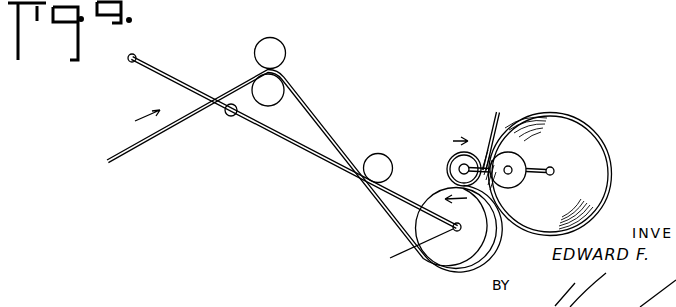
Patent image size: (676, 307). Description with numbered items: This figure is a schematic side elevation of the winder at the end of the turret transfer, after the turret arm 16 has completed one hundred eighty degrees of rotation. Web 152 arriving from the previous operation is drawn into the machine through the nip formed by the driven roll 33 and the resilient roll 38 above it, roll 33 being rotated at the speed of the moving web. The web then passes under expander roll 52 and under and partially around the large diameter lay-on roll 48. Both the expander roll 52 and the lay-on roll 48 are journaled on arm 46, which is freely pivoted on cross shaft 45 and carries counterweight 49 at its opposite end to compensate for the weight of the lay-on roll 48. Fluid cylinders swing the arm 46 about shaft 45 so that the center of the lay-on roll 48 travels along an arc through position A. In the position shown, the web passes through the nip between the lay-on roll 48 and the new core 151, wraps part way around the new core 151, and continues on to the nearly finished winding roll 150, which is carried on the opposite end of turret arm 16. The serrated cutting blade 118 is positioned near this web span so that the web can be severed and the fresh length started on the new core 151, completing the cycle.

The arm 16 is at (532, 178).
The roll 33 is at (278, 87).
The resilient roll 38 is at (278, 48).
The cross shaft 45 is at (230, 117).
The arm 46 is at (297, 147).
The lay-on roll 48 is at (455, 256).
The counterweight 49 is at (136, 55).
The expander roll 52 is at (376, 163).
The serrated cutting blade 118 is at (497, 124).
The winding roll 150 is at (600, 164).
The new core 151 is at (470, 152).
The web 152 is at (154, 136).
The position of the center of roll 48 A is at (409, 249).